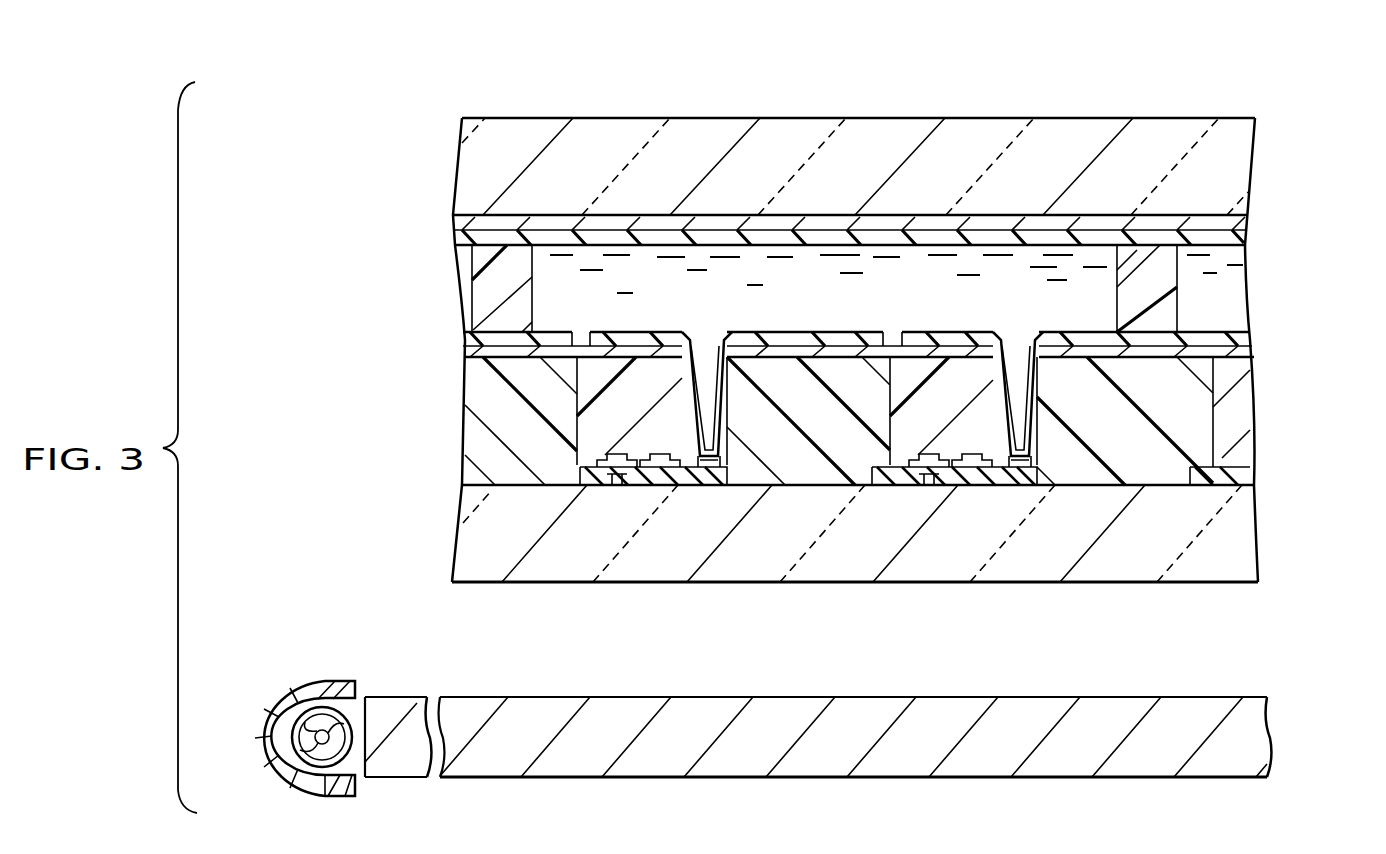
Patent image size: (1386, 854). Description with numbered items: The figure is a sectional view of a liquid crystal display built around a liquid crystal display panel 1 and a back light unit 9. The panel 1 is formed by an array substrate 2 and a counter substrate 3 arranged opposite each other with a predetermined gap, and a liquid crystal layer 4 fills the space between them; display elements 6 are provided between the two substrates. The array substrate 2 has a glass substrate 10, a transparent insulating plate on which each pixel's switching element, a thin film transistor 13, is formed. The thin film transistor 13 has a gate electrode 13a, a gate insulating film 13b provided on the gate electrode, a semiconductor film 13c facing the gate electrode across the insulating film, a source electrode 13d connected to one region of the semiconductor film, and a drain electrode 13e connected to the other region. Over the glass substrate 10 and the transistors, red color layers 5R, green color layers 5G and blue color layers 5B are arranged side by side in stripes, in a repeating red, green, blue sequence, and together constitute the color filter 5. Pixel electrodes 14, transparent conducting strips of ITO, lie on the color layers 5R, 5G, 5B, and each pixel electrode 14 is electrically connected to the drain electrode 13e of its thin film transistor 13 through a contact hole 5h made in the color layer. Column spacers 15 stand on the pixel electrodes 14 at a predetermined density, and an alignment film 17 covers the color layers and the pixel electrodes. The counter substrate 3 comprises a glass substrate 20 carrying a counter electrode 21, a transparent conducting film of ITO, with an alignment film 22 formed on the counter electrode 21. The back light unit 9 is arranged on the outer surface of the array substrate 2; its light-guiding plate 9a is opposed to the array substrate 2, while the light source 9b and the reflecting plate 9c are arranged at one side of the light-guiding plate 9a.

The liquid crystal display panel 1 is at (1283, 271).
The array substrate 2 is at (765, 608).
The counter substrate 3 is at (1038, 95).
The liquid crystal layer 4 is at (826, 258).
The color filter 5 is at (1118, 492).
The red color layer 5R is at (1248, 400).
The green color layer 5G is at (800, 462).
The blue color layer 5B is at (1160, 462).
The contact hole 5h is at (692, 342).
The display element 6 is at (738, 212).
The back light unit 9 is at (302, 672).
The light-guiding plate 9a is at (1262, 738).
The light source 9b is at (330, 772).
The reflecting plate 9c is at (256, 742).
The glass substrate 10 is at (880, 572).
The thin film transistor 13 is at (732, 492).
The gate electrode 13a is at (645, 480).
The gate insulating film 13b is at (618, 488).
The semiconductor film 13c is at (640, 460).
The source electrode 13d is at (563, 470).
The drain electrode 13e is at (716, 482).
The pixel electrode 14 is at (905, 350).
The column spacer 15 is at (518, 298).
The alignment film 17 is at (800, 334).
The glass substrate 20 is at (893, 132).
The counter electrode 21 is at (1113, 225).
The alignment film 22 is at (1010, 237).